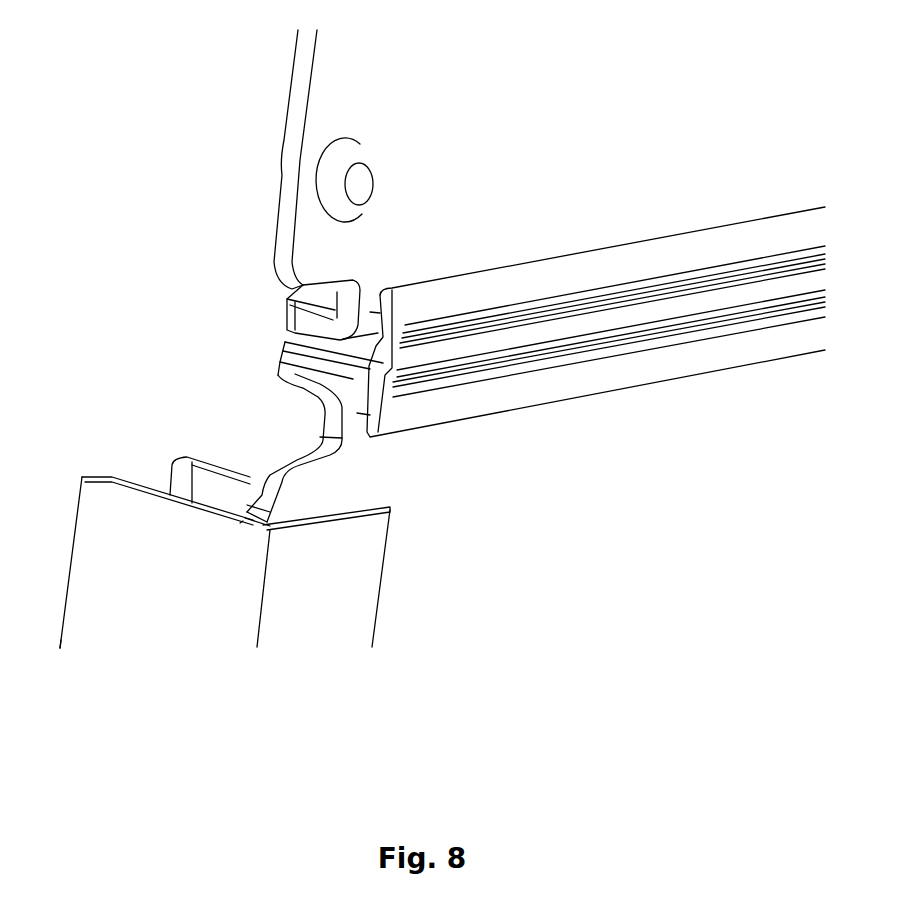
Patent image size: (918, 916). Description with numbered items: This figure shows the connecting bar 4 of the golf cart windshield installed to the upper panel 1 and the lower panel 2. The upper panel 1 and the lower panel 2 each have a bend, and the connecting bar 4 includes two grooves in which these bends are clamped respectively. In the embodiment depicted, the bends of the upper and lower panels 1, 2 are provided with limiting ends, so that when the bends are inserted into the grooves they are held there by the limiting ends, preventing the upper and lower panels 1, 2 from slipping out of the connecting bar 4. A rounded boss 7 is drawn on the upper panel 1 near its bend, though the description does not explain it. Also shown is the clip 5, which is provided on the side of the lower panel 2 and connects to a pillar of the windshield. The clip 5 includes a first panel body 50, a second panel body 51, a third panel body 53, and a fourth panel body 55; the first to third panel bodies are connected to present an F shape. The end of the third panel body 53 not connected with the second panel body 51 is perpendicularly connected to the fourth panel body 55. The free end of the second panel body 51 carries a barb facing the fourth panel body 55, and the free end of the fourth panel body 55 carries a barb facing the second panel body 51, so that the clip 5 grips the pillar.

The upper panel 1 is at (310, 92).
The pin 7 is at (327, 190).
The lower panel 2 is at (303, 447).
The connecting bar 4 is at (578, 381).
The clip 5 is at (112, 527).
The fourth panel body 55 is at (220, 483).
The first panel body 50 is at (342, 593).
The second panel body 51 is at (155, 618).
The third panel body 53 is at (240, 523).